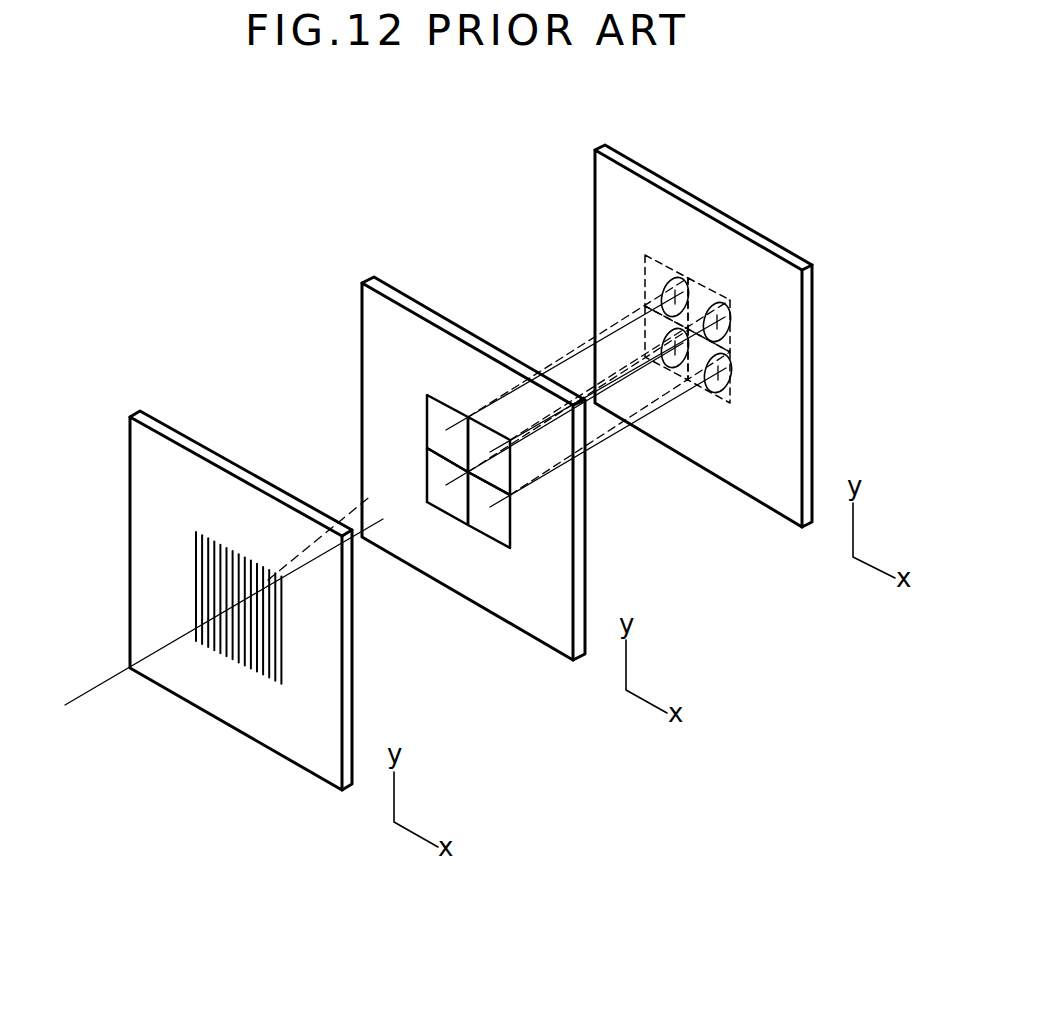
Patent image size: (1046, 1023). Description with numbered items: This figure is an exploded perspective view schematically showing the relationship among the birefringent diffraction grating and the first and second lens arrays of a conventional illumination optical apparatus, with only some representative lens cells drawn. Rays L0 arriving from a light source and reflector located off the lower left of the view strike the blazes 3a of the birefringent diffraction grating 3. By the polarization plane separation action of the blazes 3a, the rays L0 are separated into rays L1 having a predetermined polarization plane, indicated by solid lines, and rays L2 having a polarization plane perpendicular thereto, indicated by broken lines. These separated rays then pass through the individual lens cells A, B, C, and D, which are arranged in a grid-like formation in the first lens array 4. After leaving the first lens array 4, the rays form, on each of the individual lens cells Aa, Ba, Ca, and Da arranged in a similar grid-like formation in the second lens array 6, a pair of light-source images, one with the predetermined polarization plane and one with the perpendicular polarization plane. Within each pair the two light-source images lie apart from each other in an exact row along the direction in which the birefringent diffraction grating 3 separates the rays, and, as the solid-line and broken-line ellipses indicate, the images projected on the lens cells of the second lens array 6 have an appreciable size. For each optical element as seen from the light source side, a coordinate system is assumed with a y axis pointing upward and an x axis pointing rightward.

The birefringent diffraction grating 3 is at (203, 440).
The blazes 3a is at (242, 688).
The first lens array 4 is at (460, 325).
The second lens array 6 is at (702, 198).
The lens cell A is at (500, 549).
The lens cell B is at (503, 440).
The lens cell C is at (440, 397).
The lens cell D is at (432, 504).
The lens cell Aa is at (710, 400).
The lens cell Ba is at (717, 303).
The lens cell Ca is at (668, 262).
The lens cell Da is at (660, 375).
The rays L0 is at (92, 692).
The rays L1 is at (374, 528).
The rays L2 is at (350, 512).